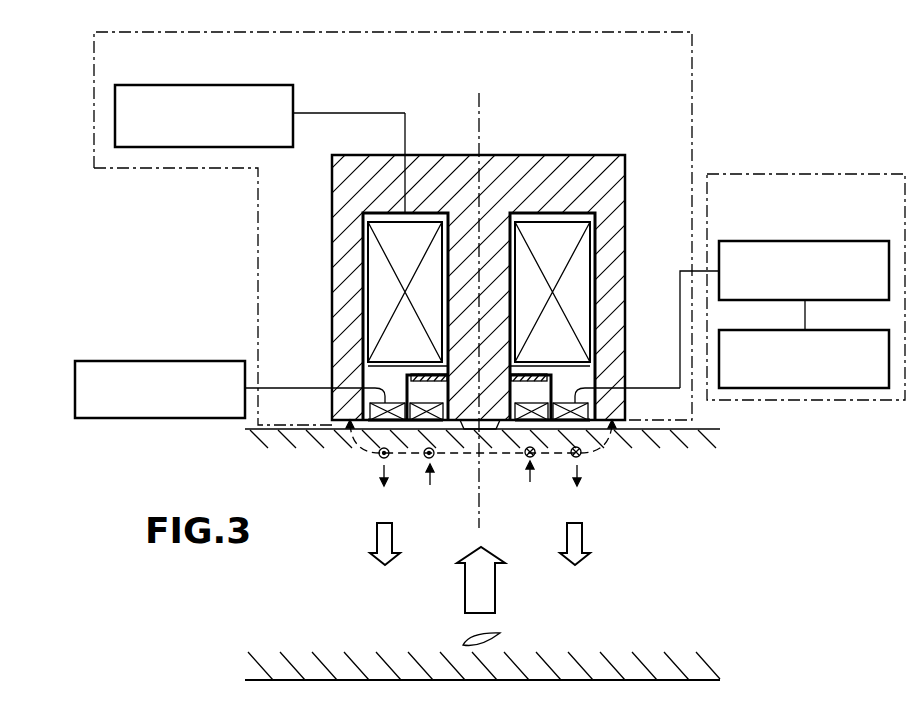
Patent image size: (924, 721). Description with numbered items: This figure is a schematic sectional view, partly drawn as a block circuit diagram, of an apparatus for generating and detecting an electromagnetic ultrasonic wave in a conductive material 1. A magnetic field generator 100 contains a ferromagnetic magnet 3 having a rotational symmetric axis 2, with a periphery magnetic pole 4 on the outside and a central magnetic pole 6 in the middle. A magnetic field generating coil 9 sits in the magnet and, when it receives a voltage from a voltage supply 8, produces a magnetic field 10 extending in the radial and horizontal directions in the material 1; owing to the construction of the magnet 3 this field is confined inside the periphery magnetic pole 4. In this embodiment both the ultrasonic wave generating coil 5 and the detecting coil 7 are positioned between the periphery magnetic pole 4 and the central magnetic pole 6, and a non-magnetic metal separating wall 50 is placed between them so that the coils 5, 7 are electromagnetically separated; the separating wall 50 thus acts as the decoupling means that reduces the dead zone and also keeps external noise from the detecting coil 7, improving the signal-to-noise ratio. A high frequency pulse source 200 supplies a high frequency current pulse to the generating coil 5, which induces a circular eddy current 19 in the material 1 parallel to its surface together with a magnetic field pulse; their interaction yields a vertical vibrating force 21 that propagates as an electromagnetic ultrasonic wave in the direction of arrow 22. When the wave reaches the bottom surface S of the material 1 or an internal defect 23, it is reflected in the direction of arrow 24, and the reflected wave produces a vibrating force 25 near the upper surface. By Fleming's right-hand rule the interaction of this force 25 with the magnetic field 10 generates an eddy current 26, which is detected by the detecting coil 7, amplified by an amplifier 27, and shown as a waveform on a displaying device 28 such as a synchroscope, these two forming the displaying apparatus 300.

The conductive material 1 is at (705, 430).
The rotational symmetric axis 2 is at (481, 110).
The ferromagnetic magnet 3 is at (564, 147).
The periphery magnetic pole 4 is at (608, 242).
The ultrasonic wave generating coil 5 is at (372, 381).
The central magnetic pole 6 is at (490, 210).
The detecting coil 7 is at (408, 388).
The voltage supply 8 is at (188, 148).
The magnetic field generating coil 9 is at (389, 220).
The magnetic field 10 is at (352, 448).
The eddy current 19 is at (380, 458).
The vibrating force 21 is at (382, 478).
The propagation direction arrow 22 is at (392, 540).
The internal defect 23 is at (470, 637).
The reflection direction arrow 24 is at (495, 596).
The vibrating force 25 is at (433, 478).
The eddy current 26 is at (428, 460).
The amplifier 27 is at (719, 256).
The displaying device 28 is at (797, 388).
The non-magnetic metal separating wall 50 is at (426, 373).
The magnetic field generator 100 is at (694, 96).
The high frequency pulse source 200 is at (178, 361).
The displaying apparatus 300 is at (870, 153).
The bottom surface S is at (345, 682).